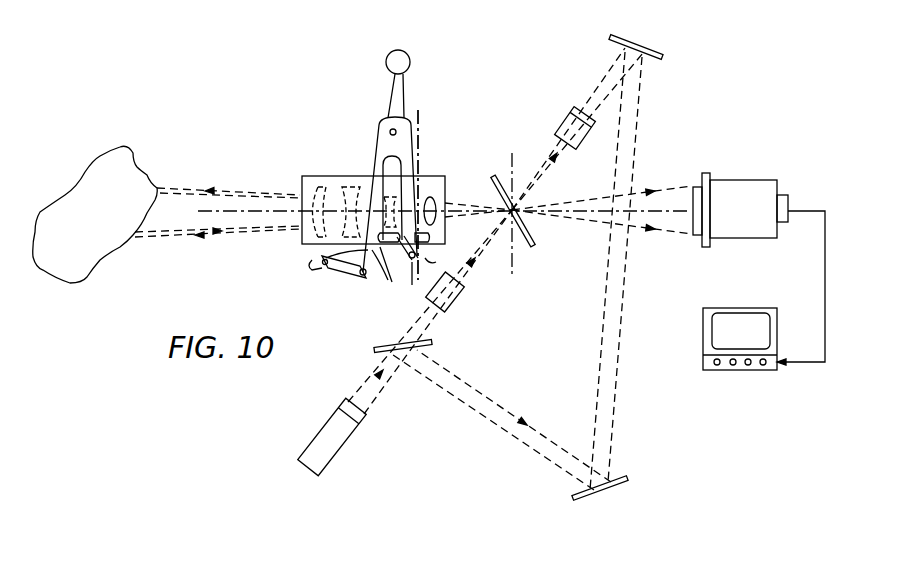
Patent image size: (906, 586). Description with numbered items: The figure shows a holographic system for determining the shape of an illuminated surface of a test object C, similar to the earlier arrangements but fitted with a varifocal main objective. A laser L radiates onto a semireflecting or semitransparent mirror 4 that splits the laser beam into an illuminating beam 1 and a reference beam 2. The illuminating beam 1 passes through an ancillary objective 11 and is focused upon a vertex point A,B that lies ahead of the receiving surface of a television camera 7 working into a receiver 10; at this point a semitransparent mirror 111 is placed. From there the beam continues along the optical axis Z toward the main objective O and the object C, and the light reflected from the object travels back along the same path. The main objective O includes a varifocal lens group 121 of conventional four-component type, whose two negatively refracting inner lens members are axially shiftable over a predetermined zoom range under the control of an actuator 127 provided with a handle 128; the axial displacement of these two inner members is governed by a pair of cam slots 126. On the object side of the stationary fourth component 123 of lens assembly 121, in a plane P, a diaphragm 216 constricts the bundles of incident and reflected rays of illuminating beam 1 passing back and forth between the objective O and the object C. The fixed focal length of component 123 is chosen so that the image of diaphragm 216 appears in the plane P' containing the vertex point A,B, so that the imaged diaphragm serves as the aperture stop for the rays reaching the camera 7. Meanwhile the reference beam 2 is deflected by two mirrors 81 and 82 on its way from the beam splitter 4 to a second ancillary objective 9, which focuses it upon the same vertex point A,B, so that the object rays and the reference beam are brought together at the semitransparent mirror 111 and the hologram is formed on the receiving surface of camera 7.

The illuminating beam 1 is at (420, 329).
The reference beam 2 is at (500, 418).
The semireflecting mirror 4 is at (372, 345).
The television camera 7 is at (748, 186).
The ancillary objective 9 is at (570, 120).
The receiver 10 is at (713, 331).
The ancillary objective 11 is at (468, 300).
The mirror 81 is at (615, 488).
The mirror 82 is at (654, 58).
The semitransparent mirror 111 is at (530, 247).
The varifocal lens group 121 is at (318, 176).
The stationary fourth component 123 is at (440, 198).
The cam slots 126 is at (372, 270).
The actuator 127 is at (376, 150).
The handle 128 is at (393, 60).
The diaphragm 216 is at (421, 180).
The test object C is at (76, 201).
The main objective O is at (370, 185).
The optical axis Z is at (263, 213).
The plane of diaphragm P is at (431, 261).
The image plane of diaphragm P' is at (495, 189).
The vertex point A,B is at (514, 210).
The laser L is at (340, 446).